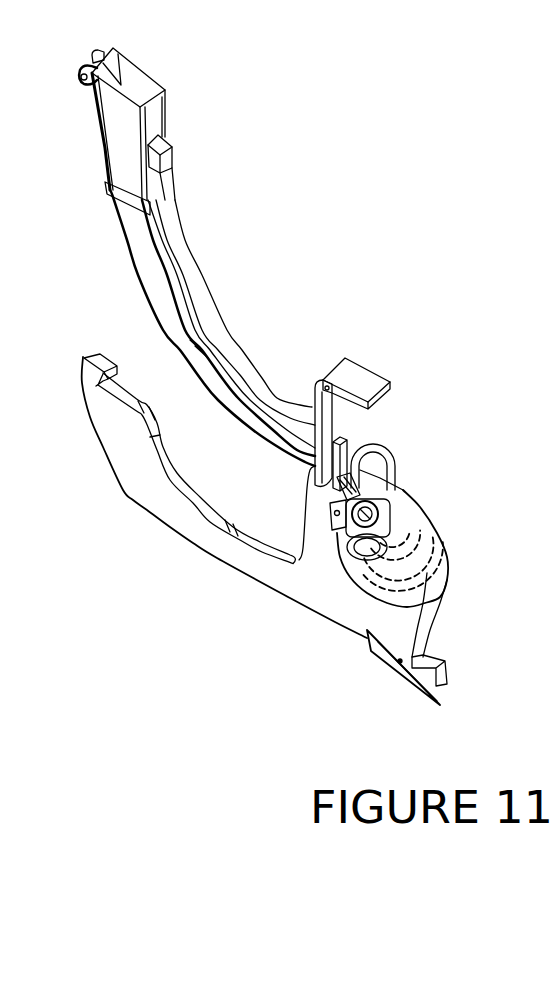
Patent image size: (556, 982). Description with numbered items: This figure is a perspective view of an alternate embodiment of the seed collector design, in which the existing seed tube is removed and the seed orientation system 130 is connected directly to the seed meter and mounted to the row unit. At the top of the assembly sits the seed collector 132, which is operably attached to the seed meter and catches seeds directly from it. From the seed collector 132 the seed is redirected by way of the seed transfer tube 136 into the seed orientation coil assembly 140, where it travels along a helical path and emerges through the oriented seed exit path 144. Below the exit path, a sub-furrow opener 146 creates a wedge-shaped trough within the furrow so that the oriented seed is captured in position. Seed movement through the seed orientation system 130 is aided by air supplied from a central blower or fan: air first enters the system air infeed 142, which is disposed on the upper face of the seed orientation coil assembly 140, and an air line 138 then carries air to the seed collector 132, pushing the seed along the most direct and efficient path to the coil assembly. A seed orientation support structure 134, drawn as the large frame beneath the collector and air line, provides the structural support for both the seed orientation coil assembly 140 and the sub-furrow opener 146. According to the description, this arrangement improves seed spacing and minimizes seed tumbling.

The seed orientation system 130 is at (410, 287).
The seed collector 132 is at (133, 243).
The seed orientation support structure 134 is at (137, 498).
The seed transfer tube 136 is at (260, 410).
The air line 138 is at (210, 322).
The seed orientation coil assembly 140 is at (444, 542).
The system air infeed 142 is at (408, 520).
The oriented seed exit path 144 is at (427, 628).
The sub-furrow opener 146 is at (440, 693).